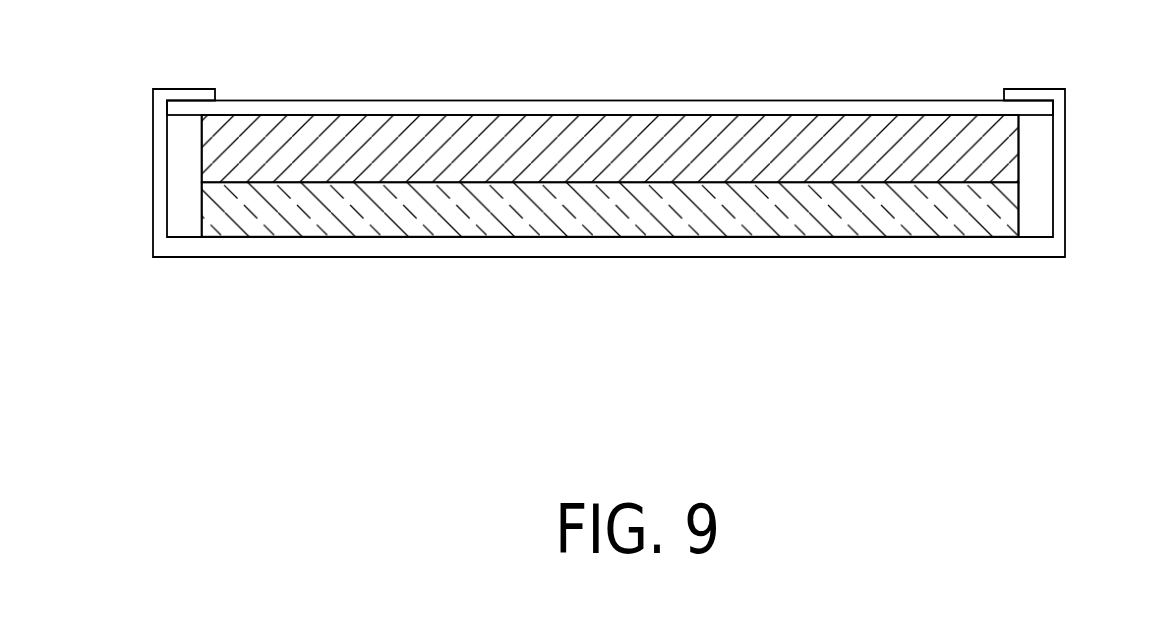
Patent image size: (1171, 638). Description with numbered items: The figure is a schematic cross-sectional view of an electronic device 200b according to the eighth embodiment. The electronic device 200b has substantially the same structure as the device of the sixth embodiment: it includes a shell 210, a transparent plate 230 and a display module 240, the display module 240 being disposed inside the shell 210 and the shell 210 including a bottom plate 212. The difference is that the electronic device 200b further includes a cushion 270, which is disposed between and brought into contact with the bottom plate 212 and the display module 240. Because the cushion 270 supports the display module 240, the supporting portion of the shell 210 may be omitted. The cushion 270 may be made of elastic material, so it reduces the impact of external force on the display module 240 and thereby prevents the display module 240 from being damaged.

The electronic device 200b is at (654, 198).
The shell 210 is at (1053, 265).
The bottom plate 212 is at (855, 246).
The transparent plate 230 is at (273, 108).
The display module 240 is at (435, 128).
The cushion 270 is at (581, 233).